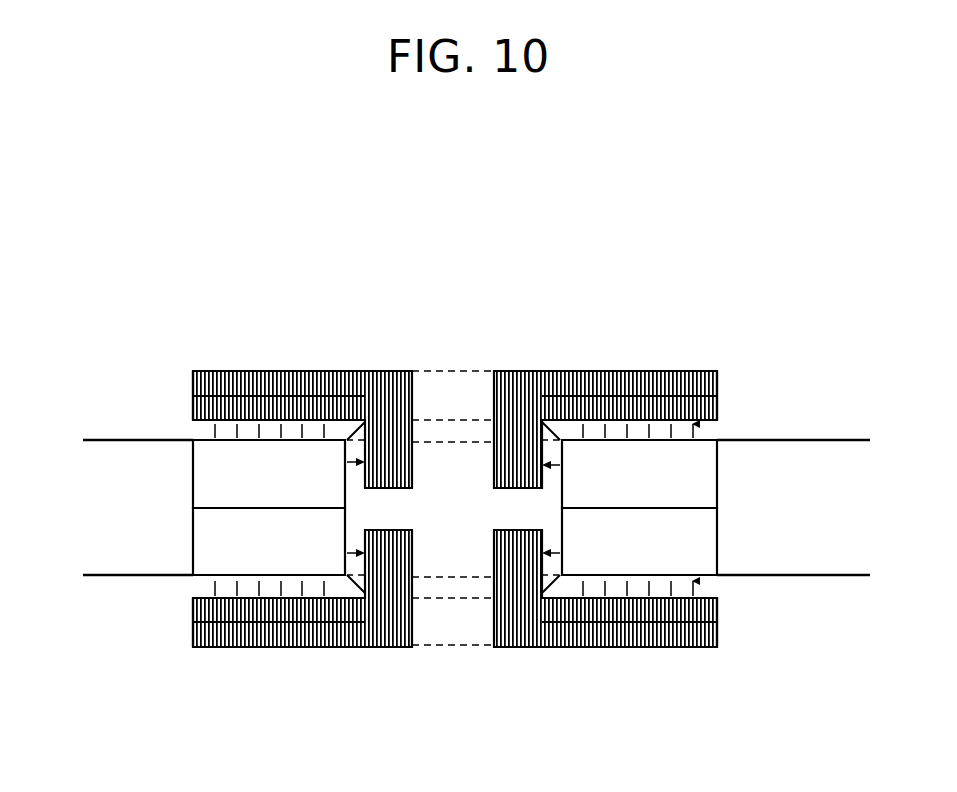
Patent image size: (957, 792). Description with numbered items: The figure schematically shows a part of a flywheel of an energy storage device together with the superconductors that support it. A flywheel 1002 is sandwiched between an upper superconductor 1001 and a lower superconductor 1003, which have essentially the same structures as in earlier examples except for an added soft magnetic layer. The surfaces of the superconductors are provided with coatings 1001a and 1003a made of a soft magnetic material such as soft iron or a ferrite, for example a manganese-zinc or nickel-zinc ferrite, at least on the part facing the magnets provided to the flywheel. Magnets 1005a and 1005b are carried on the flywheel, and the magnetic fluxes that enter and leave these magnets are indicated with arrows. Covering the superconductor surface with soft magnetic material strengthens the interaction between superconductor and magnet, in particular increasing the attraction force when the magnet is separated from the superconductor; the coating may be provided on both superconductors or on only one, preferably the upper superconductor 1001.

The superconductor 1001 is at (336, 373).
The coating 1001a is at (193, 405).
The flywheel 1002 is at (118, 576).
The superconductor 1003 is at (298, 648).
The coating 1003a is at (192, 607).
The magnet 1005a is at (755, 403).
The magnet 1005b is at (200, 538).